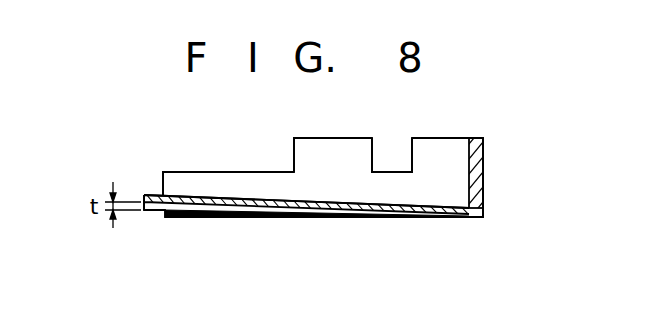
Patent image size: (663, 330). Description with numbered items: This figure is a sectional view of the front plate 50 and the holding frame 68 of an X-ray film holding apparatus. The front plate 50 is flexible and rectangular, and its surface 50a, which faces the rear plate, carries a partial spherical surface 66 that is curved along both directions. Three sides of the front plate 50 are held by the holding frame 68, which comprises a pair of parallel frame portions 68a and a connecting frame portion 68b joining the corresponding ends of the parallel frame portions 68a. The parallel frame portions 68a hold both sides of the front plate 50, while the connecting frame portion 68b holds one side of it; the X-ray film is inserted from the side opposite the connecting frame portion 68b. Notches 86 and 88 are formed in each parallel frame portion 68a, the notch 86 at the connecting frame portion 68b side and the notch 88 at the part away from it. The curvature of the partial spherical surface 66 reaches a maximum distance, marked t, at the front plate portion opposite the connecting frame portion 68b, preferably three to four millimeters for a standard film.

The holding frame 68 is at (484, 160).
The parallel frame portion 68a is at (459, 148).
The connecting frame portion 68b is at (484, 192).
The notch 88 is at (293, 153).
The notch 86 is at (412, 153).
The partial spherical surface 66 is at (197, 195).
The front plate 50 is at (412, 217).
The surface 50a is at (252, 197).